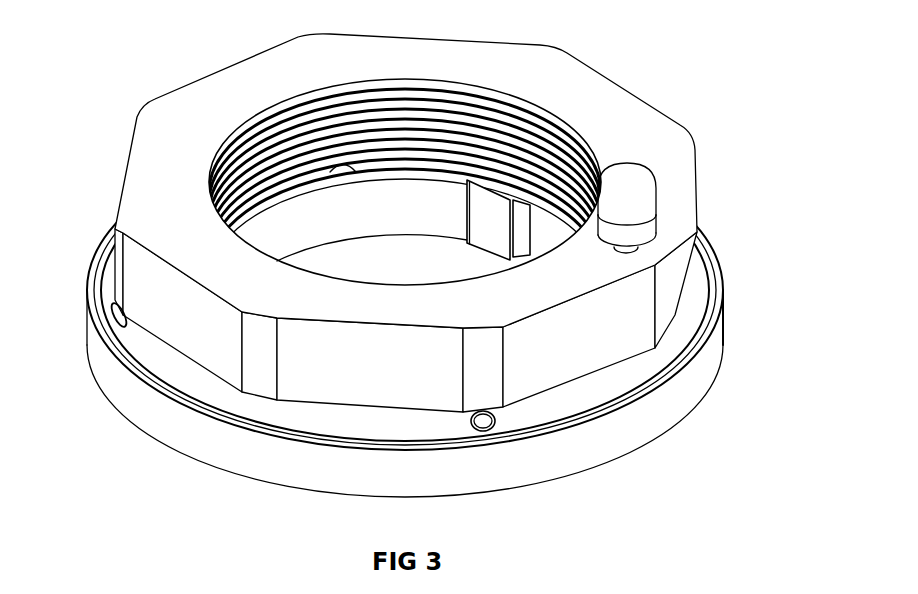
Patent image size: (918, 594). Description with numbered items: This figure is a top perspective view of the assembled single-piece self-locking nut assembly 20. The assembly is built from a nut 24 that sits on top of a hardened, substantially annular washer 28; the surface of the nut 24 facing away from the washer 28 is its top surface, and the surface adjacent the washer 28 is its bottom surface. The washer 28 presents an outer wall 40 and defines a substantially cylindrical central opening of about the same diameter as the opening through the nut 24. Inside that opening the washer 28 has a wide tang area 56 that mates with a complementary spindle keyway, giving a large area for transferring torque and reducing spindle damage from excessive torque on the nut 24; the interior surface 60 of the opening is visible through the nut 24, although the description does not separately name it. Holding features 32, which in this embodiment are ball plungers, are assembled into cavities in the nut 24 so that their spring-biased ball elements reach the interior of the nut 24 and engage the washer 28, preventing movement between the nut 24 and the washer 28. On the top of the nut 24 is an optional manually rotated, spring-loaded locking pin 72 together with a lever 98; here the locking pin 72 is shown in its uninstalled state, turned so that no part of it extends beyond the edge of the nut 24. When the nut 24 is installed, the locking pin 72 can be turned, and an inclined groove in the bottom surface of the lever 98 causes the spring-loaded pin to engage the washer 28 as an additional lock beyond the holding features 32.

The self-locking nut assembly 20 is at (438, 273).
The nut 24 is at (680, 125).
The washer 28 is at (652, 433).
The holding features 32 is at (123, 318).
The outer wall 40 is at (717, 337).
The wide tang area 56 is at (470, 244).
The inner bore wall 60 is at (337, 221).
The locking pin 72 is at (657, 203).
The lever 98 is at (642, 183).